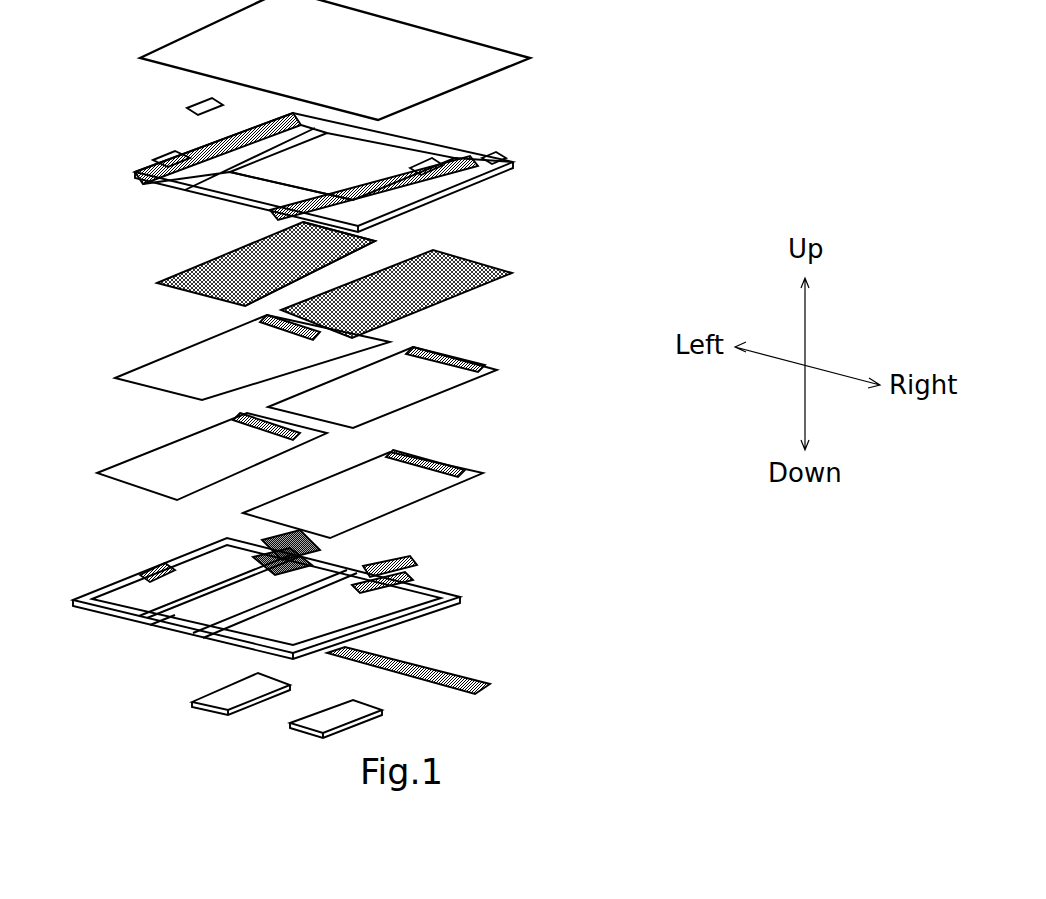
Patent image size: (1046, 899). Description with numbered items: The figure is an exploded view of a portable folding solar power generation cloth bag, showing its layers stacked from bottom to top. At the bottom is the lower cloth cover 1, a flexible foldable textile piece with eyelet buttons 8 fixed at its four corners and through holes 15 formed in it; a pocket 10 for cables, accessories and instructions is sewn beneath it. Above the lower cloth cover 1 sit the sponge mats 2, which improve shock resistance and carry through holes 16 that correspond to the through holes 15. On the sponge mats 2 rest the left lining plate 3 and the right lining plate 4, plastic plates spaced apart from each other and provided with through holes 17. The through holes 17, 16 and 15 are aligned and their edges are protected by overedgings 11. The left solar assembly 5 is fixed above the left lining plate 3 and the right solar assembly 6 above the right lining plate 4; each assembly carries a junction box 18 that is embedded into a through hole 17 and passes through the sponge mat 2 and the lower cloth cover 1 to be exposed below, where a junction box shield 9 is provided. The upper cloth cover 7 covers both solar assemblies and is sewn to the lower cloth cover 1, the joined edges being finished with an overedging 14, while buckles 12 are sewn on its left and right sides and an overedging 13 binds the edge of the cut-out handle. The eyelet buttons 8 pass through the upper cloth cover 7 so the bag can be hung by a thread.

The lower cloth cover 1 is at (455, 598).
The sponge mat 2 is at (483, 473).
The left lining plate 3 is at (390, 342).
The right lining plate 4 is at (497, 370).
The left solar assembly 5 is at (365, 240).
The right solar assembly 6 is at (512, 273).
The upper cloth cover 7 is at (463, 173).
The eyelet buttons 8 is at (440, 572).
The junction box shield 9 is at (460, 673).
The pocket 10 is at (383, 707).
The overedgings 11 is at (415, 567).
The buckles 12 is at (505, 165).
The overedging 13 is at (440, 165).
The overedging 14 is at (530, 58).
The through holes 15 is at (400, 590).
The through holes 16 is at (300, 437).
The through holes 17 is at (262, 333).
The junction box 18 is at (303, 228).